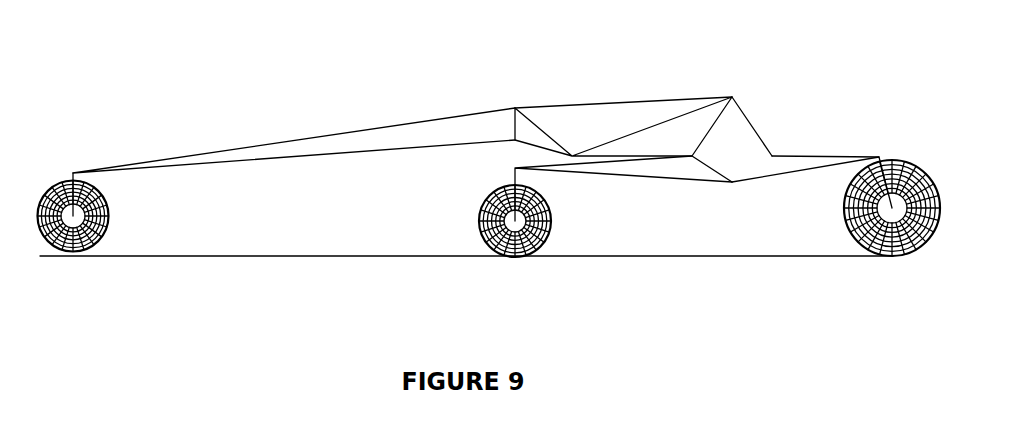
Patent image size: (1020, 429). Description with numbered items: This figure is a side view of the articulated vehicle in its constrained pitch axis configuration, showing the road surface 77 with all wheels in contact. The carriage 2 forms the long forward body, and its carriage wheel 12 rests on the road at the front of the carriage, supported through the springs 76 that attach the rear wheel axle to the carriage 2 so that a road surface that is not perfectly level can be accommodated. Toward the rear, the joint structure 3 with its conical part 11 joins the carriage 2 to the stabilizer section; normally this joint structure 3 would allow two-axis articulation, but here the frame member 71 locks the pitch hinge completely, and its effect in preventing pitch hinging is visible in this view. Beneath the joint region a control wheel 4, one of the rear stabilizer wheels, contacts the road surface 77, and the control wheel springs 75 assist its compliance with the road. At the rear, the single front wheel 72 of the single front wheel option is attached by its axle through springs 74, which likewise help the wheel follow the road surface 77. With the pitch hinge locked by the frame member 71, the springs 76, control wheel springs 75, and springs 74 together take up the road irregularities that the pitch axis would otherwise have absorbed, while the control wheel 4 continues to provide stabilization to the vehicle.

The carriage 2 is at (350, 131).
The joint structure 3 is at (687, 138).
The control wheel 4 is at (552, 218).
The conical part 11 is at (760, 130).
The carriage wheel 12 is at (110, 213).
The frame member 71 is at (623, 100).
The single front wheel 72 is at (916, 249).
The springs 74 is at (880, 163).
The control wheel springs 75 is at (512, 177).
The springs 76 is at (69, 177).
The road surface 77 is at (807, 152).